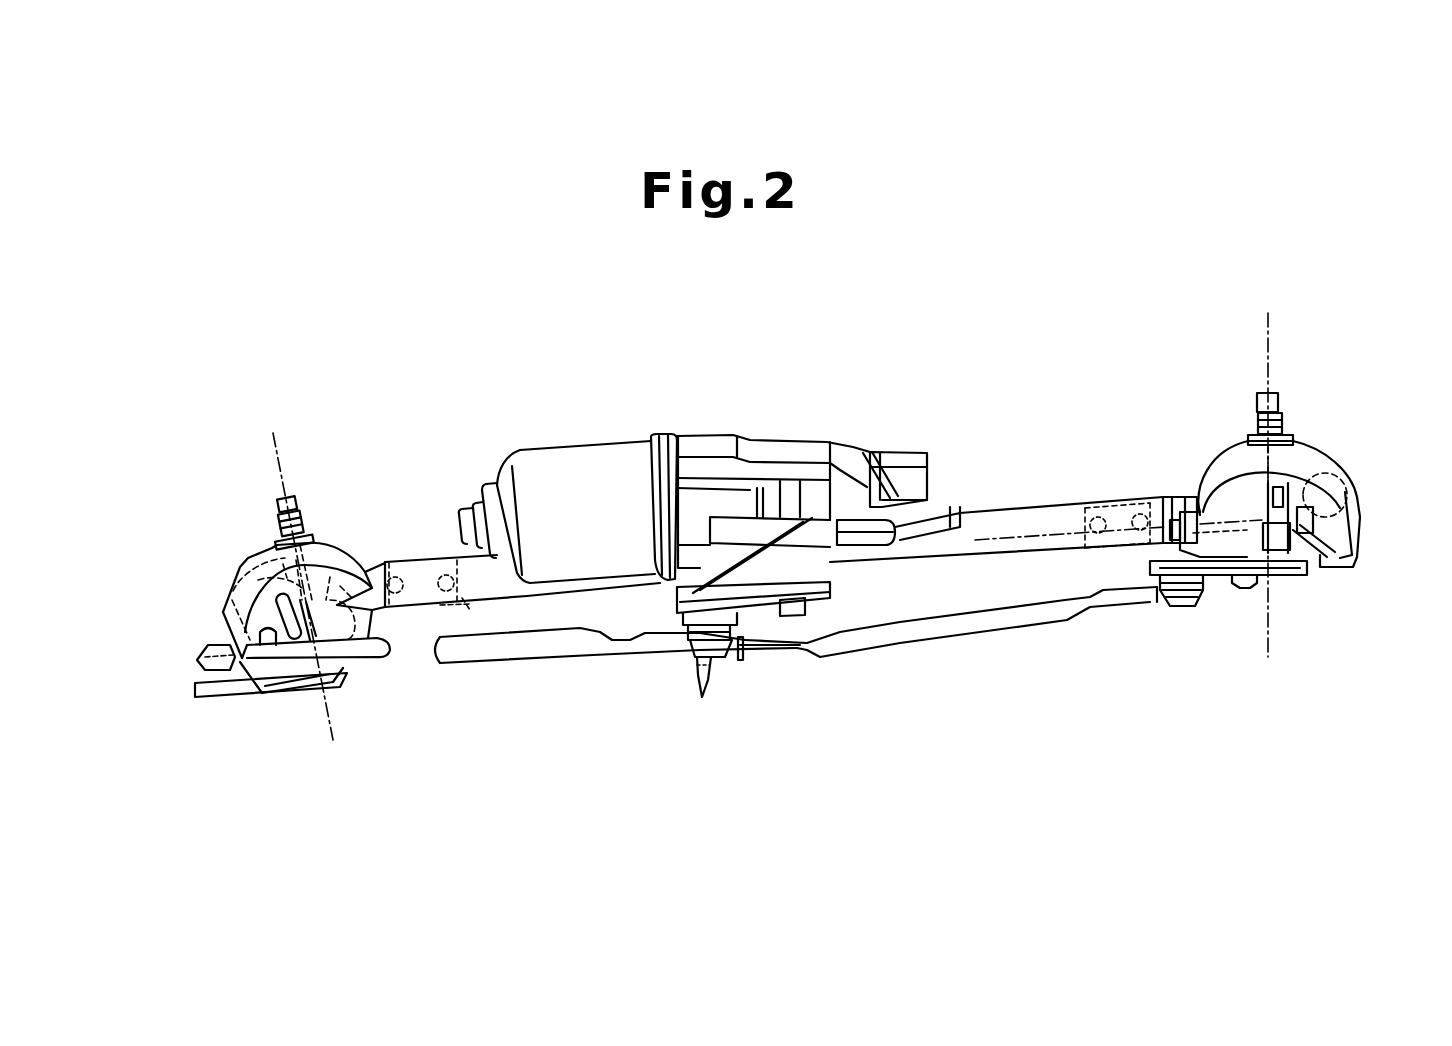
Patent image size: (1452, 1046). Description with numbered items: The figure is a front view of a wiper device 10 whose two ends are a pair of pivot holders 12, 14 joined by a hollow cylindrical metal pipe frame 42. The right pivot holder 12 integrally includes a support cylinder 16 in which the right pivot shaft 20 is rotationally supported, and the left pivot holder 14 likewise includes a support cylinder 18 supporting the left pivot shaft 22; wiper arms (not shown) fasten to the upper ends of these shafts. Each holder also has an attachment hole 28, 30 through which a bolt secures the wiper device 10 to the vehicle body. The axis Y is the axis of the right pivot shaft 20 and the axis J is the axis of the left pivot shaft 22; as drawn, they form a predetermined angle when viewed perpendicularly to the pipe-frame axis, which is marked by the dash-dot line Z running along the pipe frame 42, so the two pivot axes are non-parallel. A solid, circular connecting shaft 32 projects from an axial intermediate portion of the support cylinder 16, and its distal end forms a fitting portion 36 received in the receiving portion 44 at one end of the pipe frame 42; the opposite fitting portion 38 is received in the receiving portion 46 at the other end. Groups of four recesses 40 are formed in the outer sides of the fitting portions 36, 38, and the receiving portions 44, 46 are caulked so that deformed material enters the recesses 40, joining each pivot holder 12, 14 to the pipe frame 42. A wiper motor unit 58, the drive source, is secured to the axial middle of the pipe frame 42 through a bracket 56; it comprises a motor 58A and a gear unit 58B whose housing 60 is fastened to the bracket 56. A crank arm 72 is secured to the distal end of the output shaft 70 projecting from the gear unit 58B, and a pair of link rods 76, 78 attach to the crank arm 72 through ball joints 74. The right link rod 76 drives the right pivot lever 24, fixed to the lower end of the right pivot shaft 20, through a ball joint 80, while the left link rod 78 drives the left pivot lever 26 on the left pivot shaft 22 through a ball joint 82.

The wiper device 10 is at (812, 383).
The right pivot holder 12 is at (1298, 452).
The left pivot holder 14 is at (256, 562).
The support cylinder 16 is at (1247, 441).
The support cylinder 18 is at (327, 556).
The right pivot shaft 20 is at (1274, 392).
The left pivot shaft 22 is at (292, 497).
The right pivot lever 24 is at (1233, 580).
The left pivot lever 26 is at (237, 683).
The attachment hole 28 is at (1317, 487).
The attachment hole 30 is at (233, 591).
The connecting shaft 32 is at (1177, 493).
The fitting portion 36 is at (1083, 510).
The fitting portion 38 is at (467, 604).
The recess 40 is at (382, 652).
The pipe frame 42 is at (1005, 511).
The receiving portion 44 is at (1160, 497).
The receiving portion 46 is at (391, 561).
The bracket 56 is at (927, 545).
The wiper motor unit 58 is at (752, 363).
The motor 58A is at (638, 430).
The gear unit 58B is at (726, 430).
The housing 60 is at (893, 458).
The output shaft 70 is at (827, 563).
The crank arm 72 is at (768, 608).
The ball joint 74 is at (700, 700).
The right link rod 76 is at (964, 639).
The left link rod 78 is at (581, 657).
The ball joint 80 is at (1183, 613).
The ball joint 82 is at (205, 646).
The axis J is at (297, 572).
The axis Y is at (1268, 471).
The pipe frame axis Z is at (1043, 536).